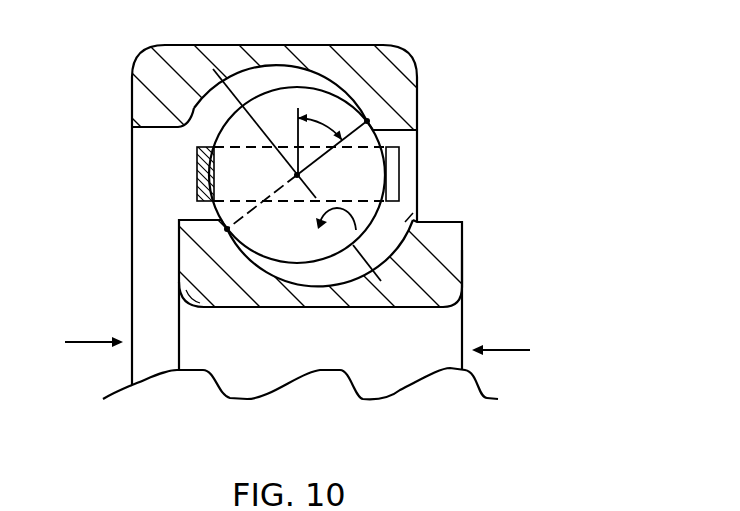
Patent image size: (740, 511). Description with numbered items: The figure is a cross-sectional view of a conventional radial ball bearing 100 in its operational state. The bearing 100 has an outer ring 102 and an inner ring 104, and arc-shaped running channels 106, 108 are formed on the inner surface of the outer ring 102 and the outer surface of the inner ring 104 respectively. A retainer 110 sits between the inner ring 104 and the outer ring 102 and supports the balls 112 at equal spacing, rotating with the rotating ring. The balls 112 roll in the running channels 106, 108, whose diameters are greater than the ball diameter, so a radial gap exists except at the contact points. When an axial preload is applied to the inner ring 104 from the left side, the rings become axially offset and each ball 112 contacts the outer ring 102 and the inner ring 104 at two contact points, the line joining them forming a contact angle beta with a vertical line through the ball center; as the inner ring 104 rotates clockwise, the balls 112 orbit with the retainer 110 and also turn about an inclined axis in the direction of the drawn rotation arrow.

The radial ball bearing 100 is at (552, 159).
The outer ring 102 is at (417, 112).
The inner ring 104 is at (179, 258).
The running channel 106 is at (193, 125).
The running channel 108 is at (383, 252).
The retainer 110 is at (417, 165).
The balls 112 is at (405, 222).